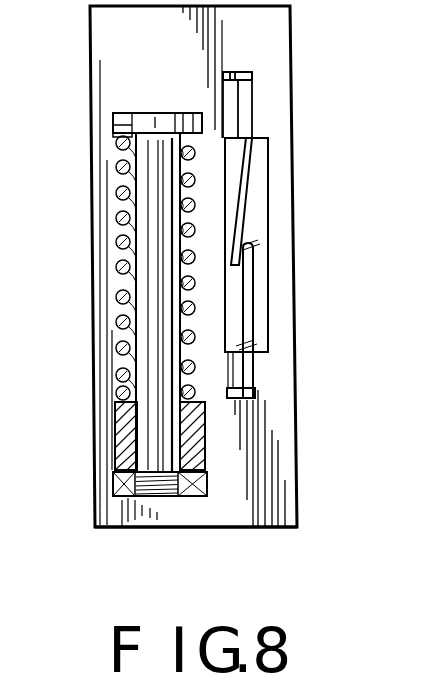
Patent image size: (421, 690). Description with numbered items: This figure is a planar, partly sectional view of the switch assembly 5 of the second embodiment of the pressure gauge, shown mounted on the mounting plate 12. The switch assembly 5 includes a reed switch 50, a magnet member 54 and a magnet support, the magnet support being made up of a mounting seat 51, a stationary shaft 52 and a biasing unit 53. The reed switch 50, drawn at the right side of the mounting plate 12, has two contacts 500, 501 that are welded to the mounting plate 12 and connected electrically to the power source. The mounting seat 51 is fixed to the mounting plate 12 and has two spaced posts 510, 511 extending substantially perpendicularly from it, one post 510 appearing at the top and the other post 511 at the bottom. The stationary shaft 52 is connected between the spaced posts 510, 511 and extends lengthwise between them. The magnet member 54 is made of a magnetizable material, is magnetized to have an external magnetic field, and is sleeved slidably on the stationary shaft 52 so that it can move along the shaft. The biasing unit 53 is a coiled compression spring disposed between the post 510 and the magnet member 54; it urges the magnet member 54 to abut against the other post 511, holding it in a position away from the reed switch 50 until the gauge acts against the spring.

The switch assembly 5 is at (308, 209).
The mounting plate 12 is at (110, 455).
The reed switch 50 is at (262, 207).
The mounting seat 51 is at (112, 122).
The stationary shaft 52 is at (158, 336).
The biasing unit 53 is at (117, 197).
The magnet member 54 is at (120, 492).
The contact 500 is at (243, 372).
The contact 501 is at (262, 166).
The spaced post 510 is at (114, 133).
The spaced post 511 is at (120, 528).